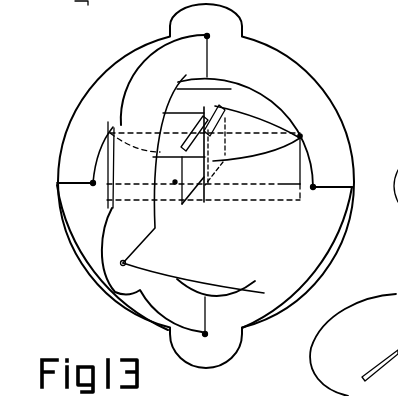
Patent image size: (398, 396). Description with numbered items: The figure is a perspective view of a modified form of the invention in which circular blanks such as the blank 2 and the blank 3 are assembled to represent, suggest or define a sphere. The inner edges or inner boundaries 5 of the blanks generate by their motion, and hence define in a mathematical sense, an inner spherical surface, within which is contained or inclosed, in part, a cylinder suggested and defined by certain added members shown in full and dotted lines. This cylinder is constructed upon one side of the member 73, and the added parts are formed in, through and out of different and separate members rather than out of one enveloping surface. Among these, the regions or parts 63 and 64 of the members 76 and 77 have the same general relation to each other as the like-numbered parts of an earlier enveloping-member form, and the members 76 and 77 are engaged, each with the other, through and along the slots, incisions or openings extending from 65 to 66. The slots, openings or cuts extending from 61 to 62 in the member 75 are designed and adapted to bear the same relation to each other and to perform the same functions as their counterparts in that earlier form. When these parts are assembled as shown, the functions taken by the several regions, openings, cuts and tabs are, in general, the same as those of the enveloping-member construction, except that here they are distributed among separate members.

The blank 2 is at (151, 79).
The blank 3 is at (115, 88).
The inner curve or boundary 5 is at (190, 80).
The slot end 61 is at (183, 143).
The slot end 62 is at (216, 125).
The region of member 76 63 is at (217, 144).
The region of member 77 64 is at (193, 160).
The incision end 65 is at (205, 114).
The incision end 66 is at (209, 162).
The member 73 is at (322, 226).
The member 75 is at (268, 128).
The member 76 is at (222, 108).
The member 77 is at (293, 163).